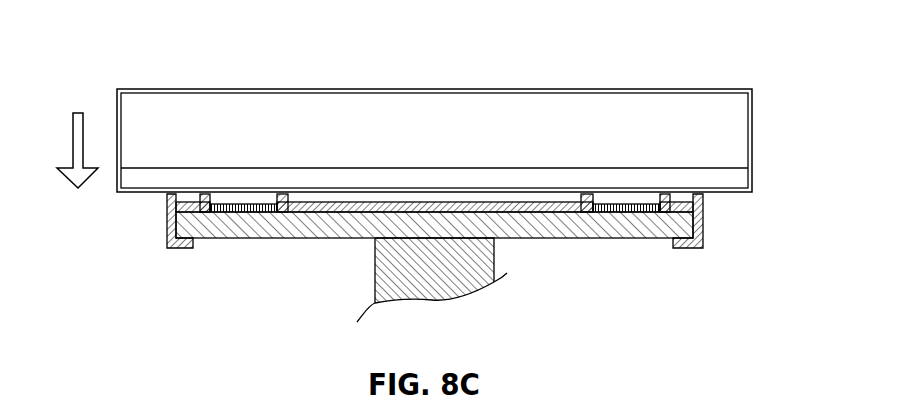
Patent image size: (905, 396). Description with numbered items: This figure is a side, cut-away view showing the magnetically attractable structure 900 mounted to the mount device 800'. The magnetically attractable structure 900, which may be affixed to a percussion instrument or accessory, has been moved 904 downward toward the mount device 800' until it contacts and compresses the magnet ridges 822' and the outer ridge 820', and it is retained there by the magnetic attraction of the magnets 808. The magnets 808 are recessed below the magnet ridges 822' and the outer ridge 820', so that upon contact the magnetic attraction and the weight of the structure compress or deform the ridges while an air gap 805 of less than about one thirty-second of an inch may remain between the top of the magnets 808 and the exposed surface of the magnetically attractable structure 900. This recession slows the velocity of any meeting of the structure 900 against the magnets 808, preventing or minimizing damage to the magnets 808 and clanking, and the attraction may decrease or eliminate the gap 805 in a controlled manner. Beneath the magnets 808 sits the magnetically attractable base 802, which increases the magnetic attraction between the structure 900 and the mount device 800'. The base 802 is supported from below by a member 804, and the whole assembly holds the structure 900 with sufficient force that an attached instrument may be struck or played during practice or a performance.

The magnetically attractable structure 900 is at (753, 181).
The movement direction 904 is at (73, 129).
The mount device 800' is at (443, 240).
The magnetically attractable base 802 is at (207, 229).
The support post 804 is at (375, 268).
The air gap 805 is at (247, 203).
The magnets 808 is at (243, 215).
The outer ridge 820' is at (433, 221).
The magnet ridges 822' is at (438, 170).